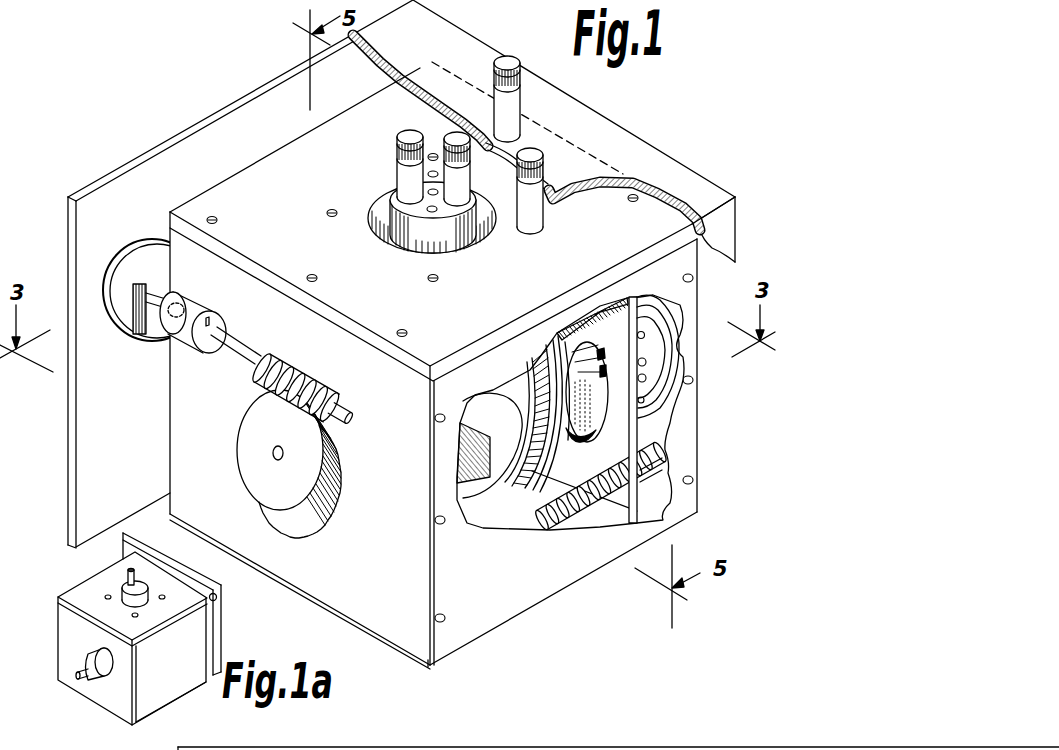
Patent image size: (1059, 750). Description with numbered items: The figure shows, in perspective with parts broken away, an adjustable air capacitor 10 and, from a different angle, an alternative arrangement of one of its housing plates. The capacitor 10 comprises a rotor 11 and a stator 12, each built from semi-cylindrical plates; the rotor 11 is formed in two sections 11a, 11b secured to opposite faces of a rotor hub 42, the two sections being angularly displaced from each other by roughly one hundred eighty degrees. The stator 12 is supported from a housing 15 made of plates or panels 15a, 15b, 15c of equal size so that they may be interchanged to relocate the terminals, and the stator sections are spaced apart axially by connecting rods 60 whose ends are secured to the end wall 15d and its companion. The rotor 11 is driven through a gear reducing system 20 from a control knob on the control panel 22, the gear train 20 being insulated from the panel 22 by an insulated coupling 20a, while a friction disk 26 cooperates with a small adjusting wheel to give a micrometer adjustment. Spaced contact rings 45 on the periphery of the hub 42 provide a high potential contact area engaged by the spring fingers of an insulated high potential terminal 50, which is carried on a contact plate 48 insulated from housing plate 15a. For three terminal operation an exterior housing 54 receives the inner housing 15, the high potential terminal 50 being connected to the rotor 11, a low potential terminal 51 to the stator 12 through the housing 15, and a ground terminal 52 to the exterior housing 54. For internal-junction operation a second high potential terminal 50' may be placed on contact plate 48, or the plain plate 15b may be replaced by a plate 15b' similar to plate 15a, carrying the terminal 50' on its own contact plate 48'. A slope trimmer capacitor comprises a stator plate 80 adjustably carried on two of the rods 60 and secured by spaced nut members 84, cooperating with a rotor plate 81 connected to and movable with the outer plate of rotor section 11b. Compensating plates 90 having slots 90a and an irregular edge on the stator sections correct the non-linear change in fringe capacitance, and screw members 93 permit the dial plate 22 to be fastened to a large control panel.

In FIG. 1, the adjustable air capacitor 10 is at (689, 139).
In FIG. 1A, the adjustable air capacitor 10 is at (32, 646).
In FIG. 1, the rotor 11 is at (494, 427).
In FIG. 1, the rotor section 11a is at (467, 487).
In FIG. 1, the rotor section 11b is at (577, 423).
In FIG. 1, the stator 12 is at (565, 345).
In FIG. 1, the housing 15 is at (392, 562).
In FIG. 1, the housing plate 15a is at (433, 352).
In FIG. 1A, the housing plate 15a is at (82, 585).
In FIG. 1, the housing plate 15b is at (563, 452).
In FIG. 1A, the housing plate 15b' is at (134, 715).
In FIG. 1, the housing plate 15c is at (432, 668).
In FIG. 1, the end wall 15d is at (387, 625).
In FIG. 1, the gear reducing system 20 is at (312, 467).
In FIG. 1, the insulated coupling 20a is at (190, 297).
In FIG. 1, the control panel 22 is at (100, 183).
In FIG. 1A, the control panel 22 is at (222, 628).
In FIG. 1, the friction disk 26 is at (122, 330).
In FIG. 1, the rotor hub 42 is at (535, 368).
In FIG. 1, the contact rings 45 is at (513, 380).
In FIG. 1, the contact plate 48 is at (432, 233).
In FIG. 1A, the contact plate 48 is at (152, 613).
In FIG. 1A, the contact plate 48' is at (87, 652).
In FIG. 1, the high potential terminal 50 is at (408, 151).
In FIG. 1A, the high potential terminal 50 is at (109, 569).
In FIG. 1A, the second high potential terminal 50' is at (59, 690).
In FIG. 1, the low potential terminal 51 is at (535, 200).
In FIG. 1, the ground terminal 52 is at (508, 60).
In FIG. 1, the exterior housing 54 is at (704, 193).
In FIG. 1, the connecting rods 60 is at (665, 470).
In FIG. 1, the stator plate 80 is at (633, 440).
In FIG. 1, the rotor plate 81 is at (551, 450).
In FIG. 1, the nut members 84 is at (624, 485).
In FIG. 1, the compensating plates 90 is at (643, 368).
In FIG. 1, the slots 90a is at (647, 360).
In FIG. 1A, the screw members 93 is at (200, 747).